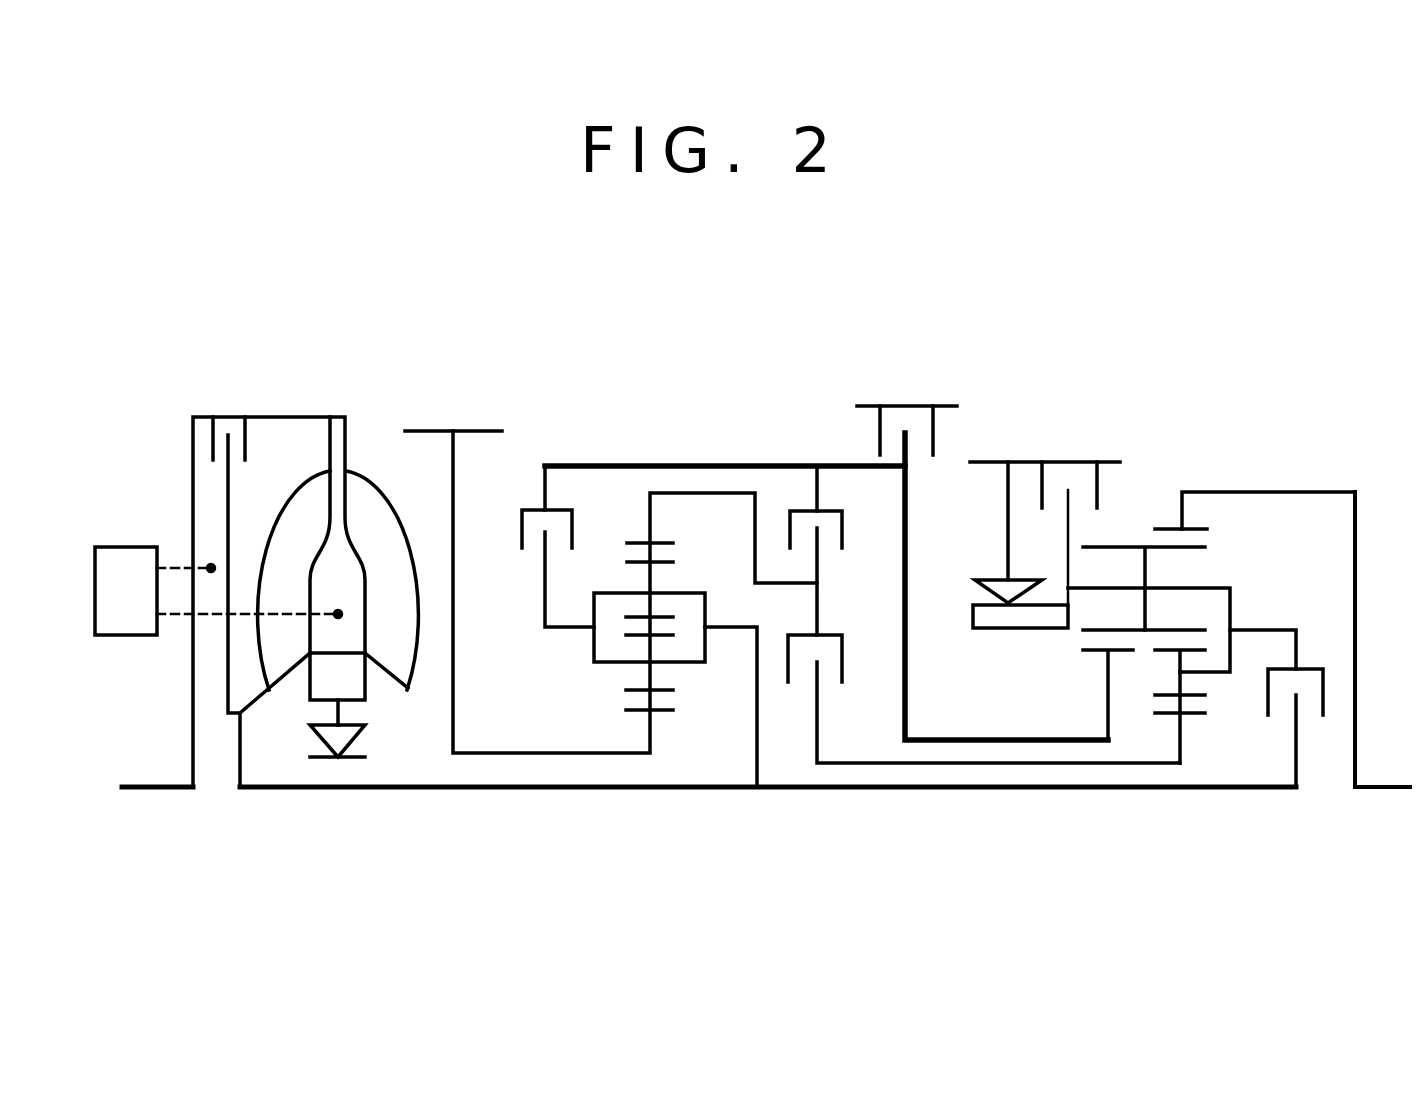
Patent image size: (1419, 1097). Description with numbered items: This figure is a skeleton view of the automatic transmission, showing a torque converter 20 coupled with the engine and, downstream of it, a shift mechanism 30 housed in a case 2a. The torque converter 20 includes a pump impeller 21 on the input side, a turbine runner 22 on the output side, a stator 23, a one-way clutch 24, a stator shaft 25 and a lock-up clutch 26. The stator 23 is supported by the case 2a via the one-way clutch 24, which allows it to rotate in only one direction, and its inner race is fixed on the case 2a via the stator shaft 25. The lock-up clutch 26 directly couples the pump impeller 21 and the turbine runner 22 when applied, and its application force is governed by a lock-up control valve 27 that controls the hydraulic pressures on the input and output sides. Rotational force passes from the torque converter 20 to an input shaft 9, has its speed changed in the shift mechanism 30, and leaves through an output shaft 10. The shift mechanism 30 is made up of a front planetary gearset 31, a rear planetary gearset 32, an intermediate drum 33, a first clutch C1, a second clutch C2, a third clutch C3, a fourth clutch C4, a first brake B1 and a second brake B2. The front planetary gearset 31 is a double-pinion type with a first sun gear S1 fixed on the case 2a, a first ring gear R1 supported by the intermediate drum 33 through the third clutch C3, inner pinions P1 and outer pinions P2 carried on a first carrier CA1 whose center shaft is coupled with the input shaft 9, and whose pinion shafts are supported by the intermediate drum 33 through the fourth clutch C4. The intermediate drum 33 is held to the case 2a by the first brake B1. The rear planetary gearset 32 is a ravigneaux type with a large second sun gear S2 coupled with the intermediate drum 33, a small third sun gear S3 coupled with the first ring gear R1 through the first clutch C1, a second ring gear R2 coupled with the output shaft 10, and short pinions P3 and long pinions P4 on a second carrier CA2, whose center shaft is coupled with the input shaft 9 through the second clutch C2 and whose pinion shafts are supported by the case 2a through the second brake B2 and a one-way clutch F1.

The case 2a is at (478, 430).
The input shaft 9 is at (540, 790).
The output shaft 10 is at (1382, 788).
The torque converter 20 is at (317, 407).
The pump impeller 21 is at (387, 525).
The turbine runner 22 is at (303, 513).
The stator 23 is at (357, 683).
The one-way clutch 24 is at (309, 736).
The stator shaft 25 is at (367, 758).
The lock-up clutch 26 is at (246, 437).
The lock-up control valve 27 is at (125, 545).
The shift mechanism 30 is at (800, 443).
The front planetary gearset 31 is at (623, 503).
The rear planetary gearset 32 is at (1163, 500).
The intermediate drum 33 is at (727, 460).
The first brake B1 is at (947, 433).
The second brake B2 is at (1118, 487).
The first clutch C1 is at (843, 657).
The second clutch C2 is at (1303, 670).
The third clutch C3 is at (873, 520).
The fourth clutch C4 is at (522, 532).
The first carrier CA1 is at (595, 645).
The second carrier CA2 is at (1273, 592).
The one-way clutch F1 is at (983, 580).
The inner pinions P1 is at (648, 675).
The outer pinions P2 is at (647, 582).
The short pinions P3 is at (1178, 678).
The long pinions P4 is at (1145, 570).
The first ring gear R1 is at (657, 543).
The second ring gear R2 is at (1190, 518).
The first sun gear S1 is at (662, 712).
The second sun gear S2 is at (1097, 655).
The third sun gear S3 is at (1197, 715).